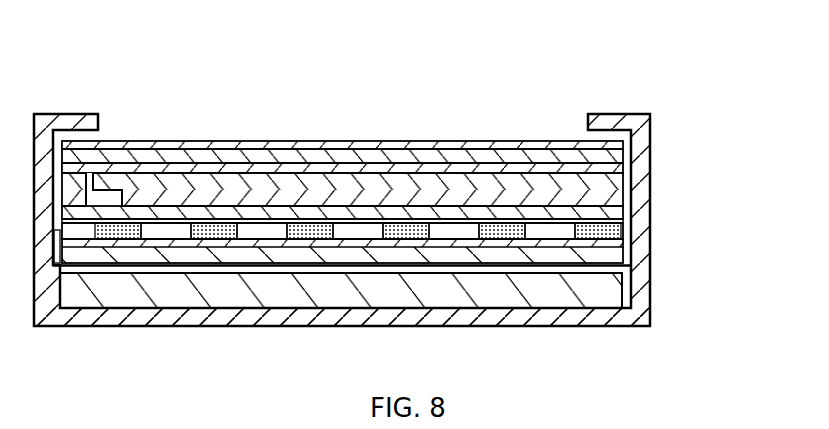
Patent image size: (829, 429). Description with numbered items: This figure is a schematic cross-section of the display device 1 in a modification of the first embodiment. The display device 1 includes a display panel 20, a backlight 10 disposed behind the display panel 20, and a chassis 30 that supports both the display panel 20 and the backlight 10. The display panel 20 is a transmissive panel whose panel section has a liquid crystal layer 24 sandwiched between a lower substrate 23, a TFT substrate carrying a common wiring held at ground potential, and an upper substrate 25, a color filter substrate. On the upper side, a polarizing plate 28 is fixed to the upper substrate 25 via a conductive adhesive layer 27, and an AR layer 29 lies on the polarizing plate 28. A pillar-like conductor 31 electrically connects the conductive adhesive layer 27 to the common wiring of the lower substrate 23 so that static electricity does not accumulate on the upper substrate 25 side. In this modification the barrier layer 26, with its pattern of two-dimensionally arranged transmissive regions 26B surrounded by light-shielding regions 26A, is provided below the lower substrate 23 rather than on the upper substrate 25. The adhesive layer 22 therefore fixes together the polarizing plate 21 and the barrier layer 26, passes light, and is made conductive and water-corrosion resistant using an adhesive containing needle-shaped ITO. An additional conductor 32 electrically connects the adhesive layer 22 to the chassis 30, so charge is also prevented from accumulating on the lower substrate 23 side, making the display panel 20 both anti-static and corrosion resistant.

The display device 1 is at (397, 199).
The backlight 10 is at (370, 248).
The display panel 20 is at (406, 188).
The polarizing plate 21 is at (383, 295).
The adhesive layer 22 is at (619, 252).
The lower substrate 23 is at (617, 221).
The liquid crystal layer 24 is at (616, 212).
The upper substrate 25 is at (384, 132).
The barrier layer 26 is at (384, 177).
The light-shielding region 26A is at (503, 232).
The transmissive region 26B is at (452, 232).
The adhesive layer 27 is at (614, 168).
The polarizing plate 28 is at (616, 156).
The AR layer 29 is at (617, 145).
The chassis 30 is at (353, 318).
The conductor 31 is at (73, 188).
The conductor 32 is at (57, 268).